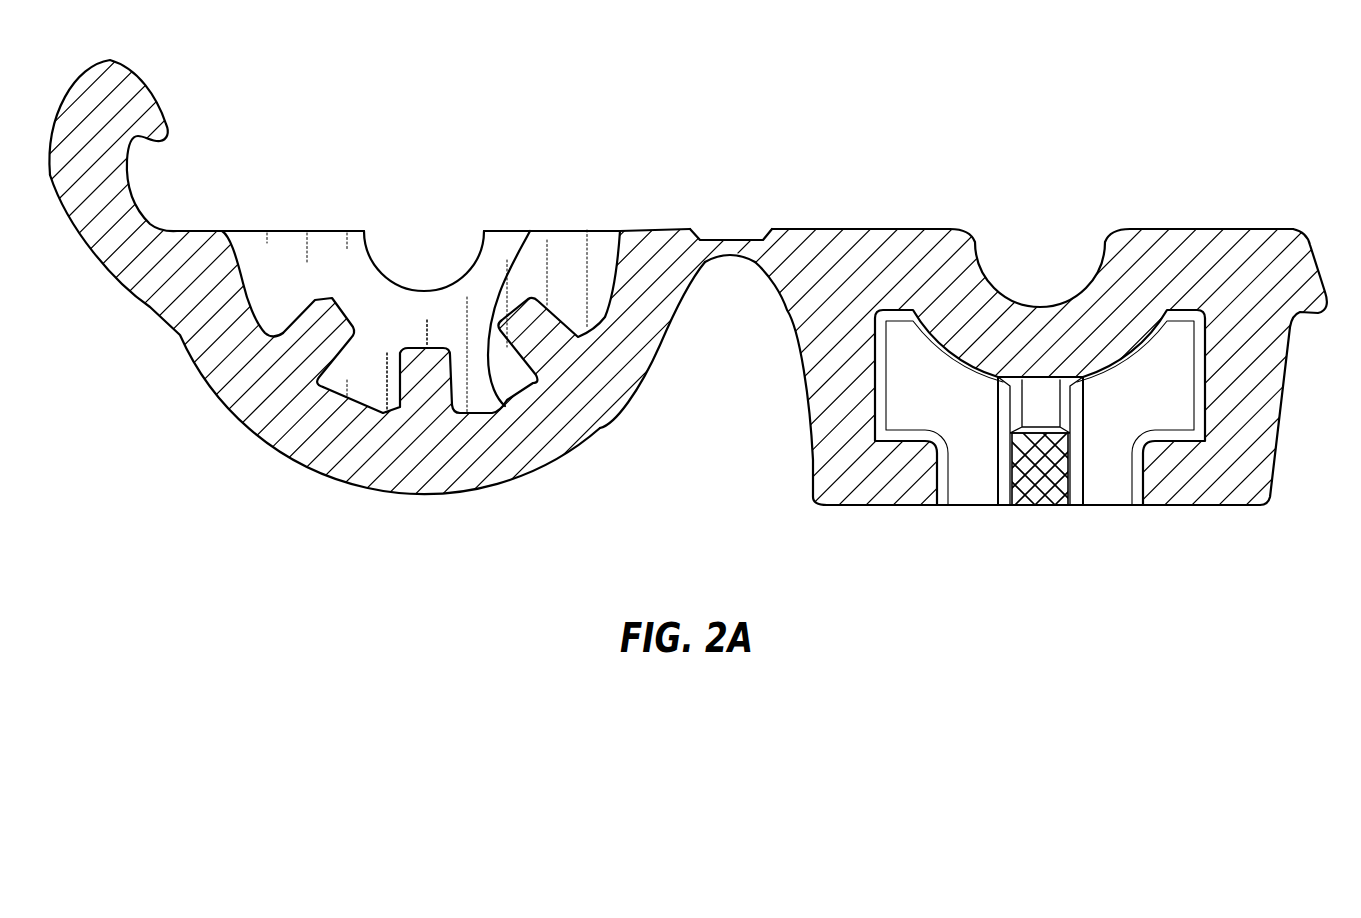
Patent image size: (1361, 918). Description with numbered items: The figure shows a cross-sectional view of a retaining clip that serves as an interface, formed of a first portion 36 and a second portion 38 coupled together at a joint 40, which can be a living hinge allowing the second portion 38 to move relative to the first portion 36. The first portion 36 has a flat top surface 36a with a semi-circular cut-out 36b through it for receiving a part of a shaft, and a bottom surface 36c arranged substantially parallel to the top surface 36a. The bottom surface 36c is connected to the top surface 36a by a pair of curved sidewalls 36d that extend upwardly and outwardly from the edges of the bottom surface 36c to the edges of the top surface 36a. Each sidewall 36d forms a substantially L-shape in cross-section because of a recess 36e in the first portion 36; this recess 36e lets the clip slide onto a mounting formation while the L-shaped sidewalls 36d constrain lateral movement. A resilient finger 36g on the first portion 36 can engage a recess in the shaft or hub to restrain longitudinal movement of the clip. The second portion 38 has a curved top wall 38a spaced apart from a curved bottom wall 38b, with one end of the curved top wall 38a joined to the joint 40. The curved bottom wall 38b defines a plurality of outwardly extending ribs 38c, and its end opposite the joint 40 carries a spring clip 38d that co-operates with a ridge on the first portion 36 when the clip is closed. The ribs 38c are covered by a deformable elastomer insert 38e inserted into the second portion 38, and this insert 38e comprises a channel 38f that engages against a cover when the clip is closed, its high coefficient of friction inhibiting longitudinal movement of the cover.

The first portion 36 is at (1250, 243).
The flat top surface 36a is at (902, 228).
The semi-circular cut-out 36b is at (1045, 263).
The bottom surface 36c is at (1223, 507).
The curved sidewalls 36d is at (800, 390).
The recess 36e is at (963, 468).
The resilient finger 36g is at (1052, 492).
The second portion 38 is at (248, 410).
The curved top wall 38a is at (426, 497).
The curved bottom wall 38b is at (521, 245).
The ribs 38c is at (321, 308).
The spring clip 38d is at (140, 104).
The elastomer insert 38e is at (364, 258).
The channel 38f is at (440, 268).
The joint 40 is at (733, 238).